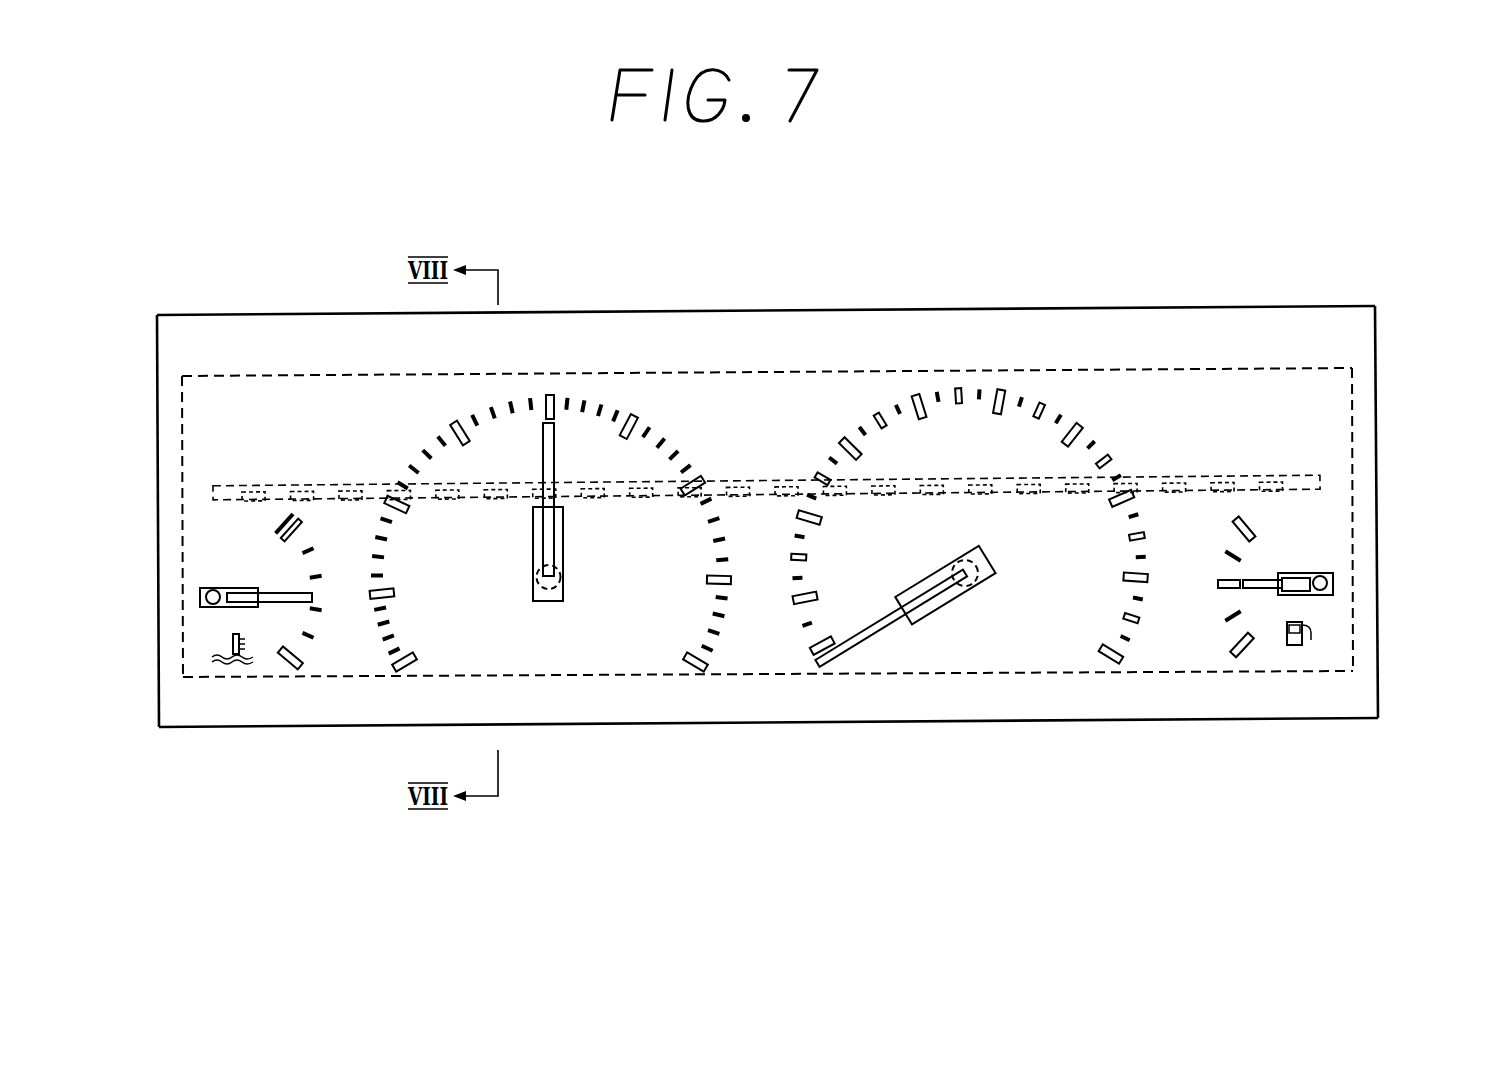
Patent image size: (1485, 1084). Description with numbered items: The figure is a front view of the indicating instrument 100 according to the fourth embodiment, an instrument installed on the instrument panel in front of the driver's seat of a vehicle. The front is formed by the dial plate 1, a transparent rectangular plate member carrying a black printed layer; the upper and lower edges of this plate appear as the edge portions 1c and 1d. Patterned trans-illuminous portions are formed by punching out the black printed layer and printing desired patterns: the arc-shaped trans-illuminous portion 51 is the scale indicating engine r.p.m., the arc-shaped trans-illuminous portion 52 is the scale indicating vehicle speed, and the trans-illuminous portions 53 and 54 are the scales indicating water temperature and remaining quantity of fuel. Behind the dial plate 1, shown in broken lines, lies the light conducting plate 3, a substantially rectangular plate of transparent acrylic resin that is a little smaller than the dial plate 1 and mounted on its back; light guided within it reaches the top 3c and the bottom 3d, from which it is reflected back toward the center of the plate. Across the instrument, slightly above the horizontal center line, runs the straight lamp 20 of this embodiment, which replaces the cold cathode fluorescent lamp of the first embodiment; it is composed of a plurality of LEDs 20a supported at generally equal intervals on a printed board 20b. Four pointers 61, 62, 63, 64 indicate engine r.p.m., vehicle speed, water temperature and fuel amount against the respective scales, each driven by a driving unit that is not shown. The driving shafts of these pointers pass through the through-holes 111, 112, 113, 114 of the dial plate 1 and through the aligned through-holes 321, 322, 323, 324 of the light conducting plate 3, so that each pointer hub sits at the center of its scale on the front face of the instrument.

The dial plate 1 is at (1340, 296).
The upper edge of instrument cluster case 1c is at (765, 312).
The lower edge of instrument cluster case 1d is at (862, 727).
The light conducting plate 3 is at (1362, 400).
The top of the light conducting plate 3c is at (697, 374).
The bottom of the light conducting plate 3d is at (795, 680).
The straight lamp 20 is at (724, 476).
The LEDs 20a is at (797, 482).
The printed board 20b is at (773, 483).
The trans-illuminous portion 51 is at (640, 612).
The trans-illuminous portion 52 is at (1033, 436).
The trans-illuminous portion 53 is at (307, 540).
The trans-illuminous portion 54 is at (1248, 549).
The pointer 61 is at (545, 466).
The pointer 62 is at (895, 617).
The pointer 63 is at (268, 590).
The pointer 64 is at (1268, 589).
The indicating instrument 100 is at (1284, 298).
The through-hole 111 is at (565, 693).
The through-hole 112 is at (1037, 718).
The through-hole 113 is at (228, 734).
The through-hole 114 is at (1345, 723).
The through-hole 321 is at (562, 582).
The through-hole 322 is at (975, 580).
The through-hole 323 is at (210, 606).
The through-hole 324 is at (1335, 595).